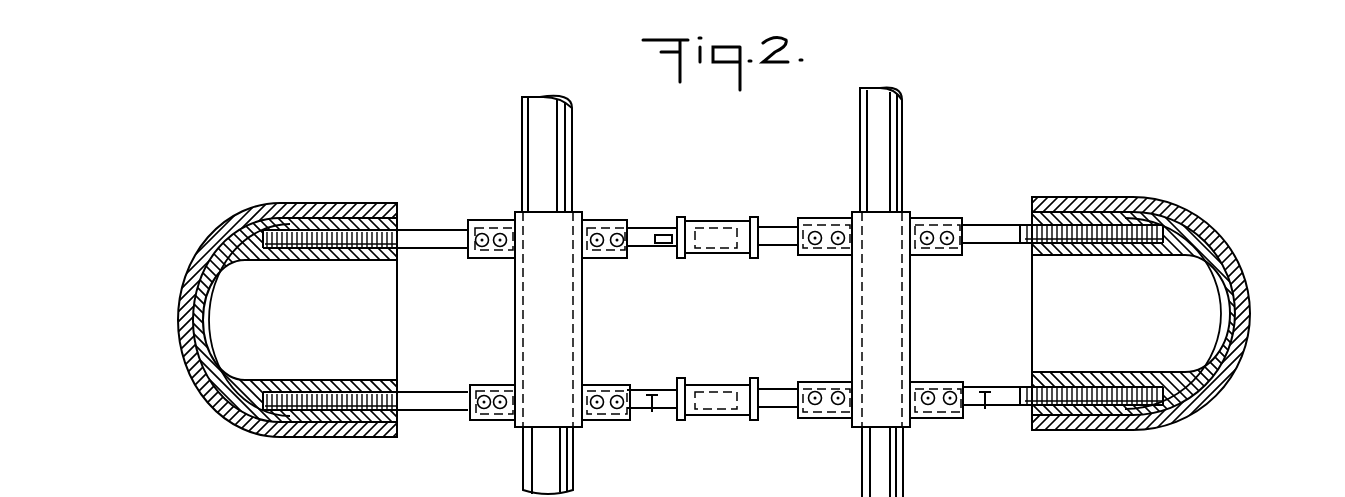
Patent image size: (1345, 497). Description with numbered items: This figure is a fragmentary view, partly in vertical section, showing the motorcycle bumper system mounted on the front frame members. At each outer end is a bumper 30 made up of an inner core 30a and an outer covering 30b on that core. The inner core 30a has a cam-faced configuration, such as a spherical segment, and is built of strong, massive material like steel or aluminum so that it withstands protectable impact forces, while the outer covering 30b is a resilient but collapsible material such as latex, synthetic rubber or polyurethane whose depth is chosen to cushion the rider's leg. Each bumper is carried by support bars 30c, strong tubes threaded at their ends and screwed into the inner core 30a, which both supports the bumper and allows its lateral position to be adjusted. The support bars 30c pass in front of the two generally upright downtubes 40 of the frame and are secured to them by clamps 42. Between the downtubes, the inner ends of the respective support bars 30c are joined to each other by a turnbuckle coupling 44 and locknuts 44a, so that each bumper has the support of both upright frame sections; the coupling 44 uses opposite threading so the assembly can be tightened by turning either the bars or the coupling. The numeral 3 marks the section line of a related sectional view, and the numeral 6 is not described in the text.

The bumper 30 is at (188, 249).
The inner core 30a is at (208, 392).
The outer covering 30b is at (182, 305).
The support bar 30c is at (1021, 388).
The downtube 40 is at (890, 138).
The clamp 42 is at (486, 209).
The coupling 44 is at (733, 220).
The locknut 44a is at (682, 218).
The pin 6 is at (652, 416).
The section line 3- 3 is at (1007, 172).